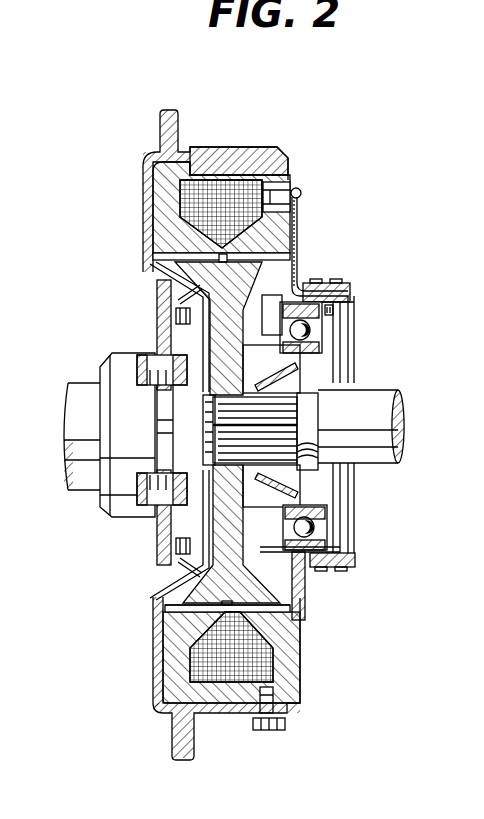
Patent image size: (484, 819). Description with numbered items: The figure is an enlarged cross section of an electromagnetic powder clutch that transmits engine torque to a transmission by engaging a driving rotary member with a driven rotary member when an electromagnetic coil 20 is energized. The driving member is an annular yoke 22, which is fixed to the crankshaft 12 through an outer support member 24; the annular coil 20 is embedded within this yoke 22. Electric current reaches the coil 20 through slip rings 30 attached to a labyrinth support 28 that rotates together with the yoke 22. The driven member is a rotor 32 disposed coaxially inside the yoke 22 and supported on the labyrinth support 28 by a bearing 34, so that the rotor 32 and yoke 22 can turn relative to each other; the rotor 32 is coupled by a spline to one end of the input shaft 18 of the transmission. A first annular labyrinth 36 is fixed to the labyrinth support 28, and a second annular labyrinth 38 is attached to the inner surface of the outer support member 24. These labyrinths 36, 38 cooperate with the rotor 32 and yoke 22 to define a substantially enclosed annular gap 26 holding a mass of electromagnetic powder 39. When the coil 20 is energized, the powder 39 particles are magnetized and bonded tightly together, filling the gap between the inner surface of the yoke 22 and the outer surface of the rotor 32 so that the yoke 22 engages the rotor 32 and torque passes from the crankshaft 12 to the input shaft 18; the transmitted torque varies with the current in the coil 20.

The crankshaft 12 is at (77, 398).
The input shaft 18 is at (378, 420).
The electromagnetic coil 20 is at (207, 182).
The annular yoke 22 is at (252, 162).
The outer support member 24 is at (158, 683).
The annular gap 26 is at (303, 616).
The labyrinth support 28 is at (348, 303).
The slip rings 30 is at (337, 283).
The rotor 32 is at (280, 598).
The bearing 34 is at (327, 523).
The first annular labyrinth 36 is at (297, 268).
The second annular labyrinth 38 is at (183, 318).
The electromagnetic powder 39 is at (165, 598).